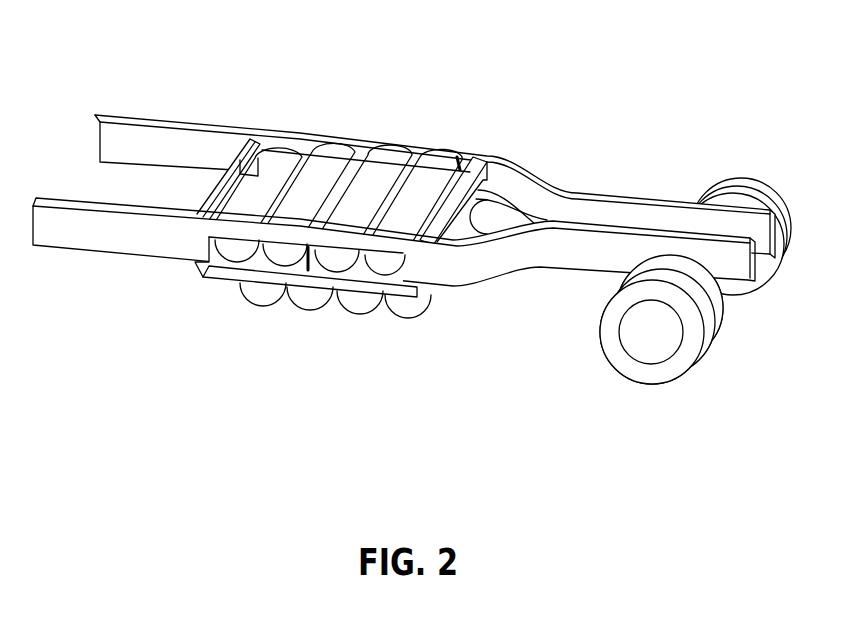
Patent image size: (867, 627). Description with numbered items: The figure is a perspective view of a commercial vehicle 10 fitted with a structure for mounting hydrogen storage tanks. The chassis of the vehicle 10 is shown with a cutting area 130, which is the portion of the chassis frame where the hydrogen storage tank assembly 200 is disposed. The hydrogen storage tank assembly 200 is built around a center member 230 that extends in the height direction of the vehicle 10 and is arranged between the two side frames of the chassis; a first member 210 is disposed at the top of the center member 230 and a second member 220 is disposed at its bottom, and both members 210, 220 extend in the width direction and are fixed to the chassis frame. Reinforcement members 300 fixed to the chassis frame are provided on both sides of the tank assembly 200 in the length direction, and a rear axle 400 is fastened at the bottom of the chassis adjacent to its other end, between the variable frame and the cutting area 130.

The vehicle 10 is at (138, 237).
The cutting area 130 is at (200, 268).
The hydrogen storage tank assembly 200 is at (303, 324).
The first member 210 is at (366, 153).
The second member 220 is at (378, 288).
The center member 230 is at (320, 158).
The reinforcement member 300 is at (153, 121).
The rear axle 400 is at (655, 347).